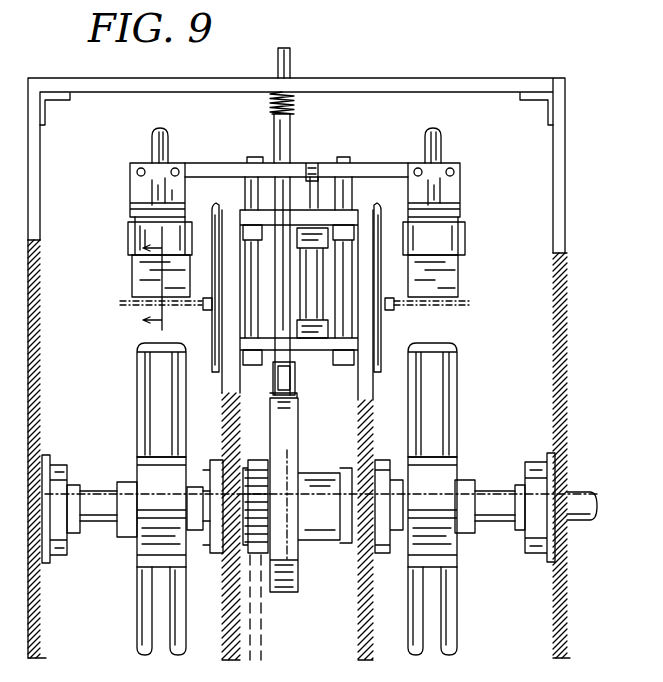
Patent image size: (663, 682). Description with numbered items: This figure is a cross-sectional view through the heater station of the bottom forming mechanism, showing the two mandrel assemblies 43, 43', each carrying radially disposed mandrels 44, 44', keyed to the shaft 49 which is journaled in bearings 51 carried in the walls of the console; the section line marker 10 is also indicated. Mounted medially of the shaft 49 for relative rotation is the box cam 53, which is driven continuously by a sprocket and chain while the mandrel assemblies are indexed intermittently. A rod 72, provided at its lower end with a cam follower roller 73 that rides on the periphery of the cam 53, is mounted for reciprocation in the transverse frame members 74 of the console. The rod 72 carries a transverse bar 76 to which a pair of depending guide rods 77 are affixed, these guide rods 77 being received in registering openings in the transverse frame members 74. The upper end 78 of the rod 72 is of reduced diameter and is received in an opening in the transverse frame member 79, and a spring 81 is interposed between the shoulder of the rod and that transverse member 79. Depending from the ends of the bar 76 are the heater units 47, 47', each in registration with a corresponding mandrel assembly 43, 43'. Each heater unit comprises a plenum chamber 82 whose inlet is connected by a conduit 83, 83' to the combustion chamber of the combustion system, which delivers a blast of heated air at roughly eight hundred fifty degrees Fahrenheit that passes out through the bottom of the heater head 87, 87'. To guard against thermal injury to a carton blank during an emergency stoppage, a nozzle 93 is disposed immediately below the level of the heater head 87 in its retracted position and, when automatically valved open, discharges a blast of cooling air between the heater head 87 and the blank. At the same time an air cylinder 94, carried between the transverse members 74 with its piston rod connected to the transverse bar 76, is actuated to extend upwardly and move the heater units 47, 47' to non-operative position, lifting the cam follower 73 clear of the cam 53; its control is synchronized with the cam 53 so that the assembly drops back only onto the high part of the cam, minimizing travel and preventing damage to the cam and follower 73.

The section line 10- 10 is at (138, 278).
The mandrel assembly 43 is at (128, 400).
The mandrel assembly 43' is at (471, 400).
The mandrel 44 is at (137, 524).
The mandrel 44' is at (461, 519).
The heater unit 47 is at (128, 236).
The heater unit 47' is at (460, 209).
The shaft 49 is at (577, 492).
The bearing 51 is at (56, 460).
The box cam 53 is at (292, 592).
The rod 72 is at (289, 131).
The cam follower roller 73 is at (298, 403).
The transverse frame member 74 is at (330, 213).
The transverse bar 76 is at (366, 163).
The guide rod 77 is at (244, 188).
The upper end of rod 78 is at (291, 58).
The transverse frame member 79 is at (360, 78).
The spring 81 is at (295, 104).
The plenum chamber 82 is at (133, 192).
The conduit 83 is at (127, 143).
The conduit 83' is at (462, 141).
The heater head 87 is at (130, 276).
The heater head 87' is at (451, 282).
The nozzle 93 is at (205, 311).
The air cylinder 94 is at (318, 308).